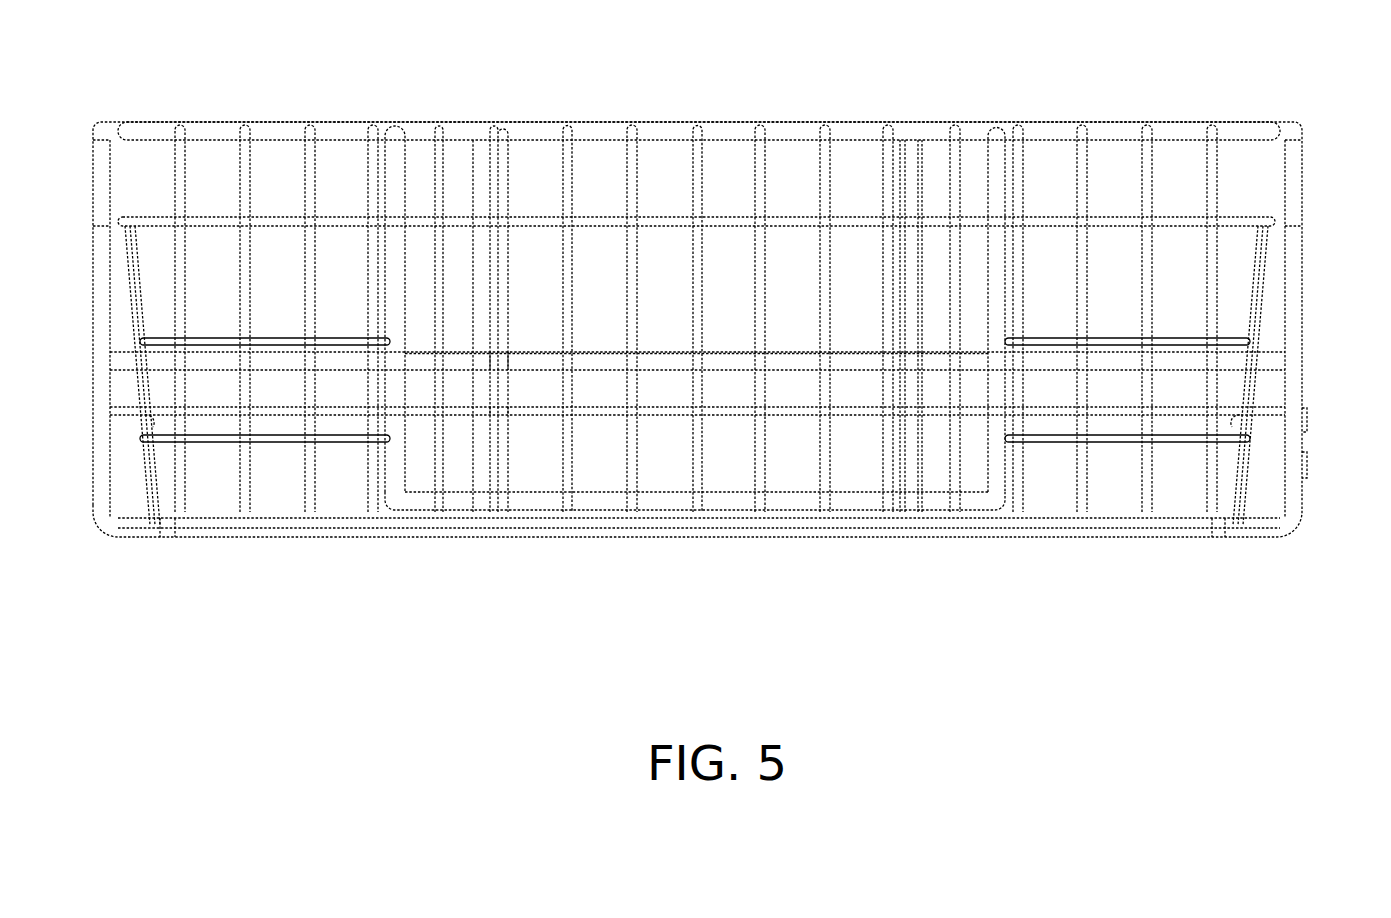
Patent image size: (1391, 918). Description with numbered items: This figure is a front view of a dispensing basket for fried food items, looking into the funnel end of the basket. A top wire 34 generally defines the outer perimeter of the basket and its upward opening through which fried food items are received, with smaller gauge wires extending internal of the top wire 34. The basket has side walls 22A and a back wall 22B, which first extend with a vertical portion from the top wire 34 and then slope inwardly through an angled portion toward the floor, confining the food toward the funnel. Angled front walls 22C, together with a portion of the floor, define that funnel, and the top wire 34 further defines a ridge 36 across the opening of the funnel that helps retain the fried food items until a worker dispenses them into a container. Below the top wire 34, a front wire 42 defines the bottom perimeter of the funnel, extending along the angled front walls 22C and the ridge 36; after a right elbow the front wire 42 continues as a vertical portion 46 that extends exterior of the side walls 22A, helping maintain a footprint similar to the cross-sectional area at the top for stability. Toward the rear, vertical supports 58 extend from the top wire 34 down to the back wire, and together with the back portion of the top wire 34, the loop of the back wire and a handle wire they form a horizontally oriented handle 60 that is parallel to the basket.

The top wire 34 is at (596, 112).
The back wall 22B is at (690, 165).
The vertical supports 58 is at (910, 252).
The handle 60 is at (794, 358).
The vertical portion 46 is at (1287, 268).
The side walls 22A is at (138, 290).
The angled front walls 22C is at (1148, 176).
The front wire 42 is at (162, 528).
The ridge 36 is at (718, 500).